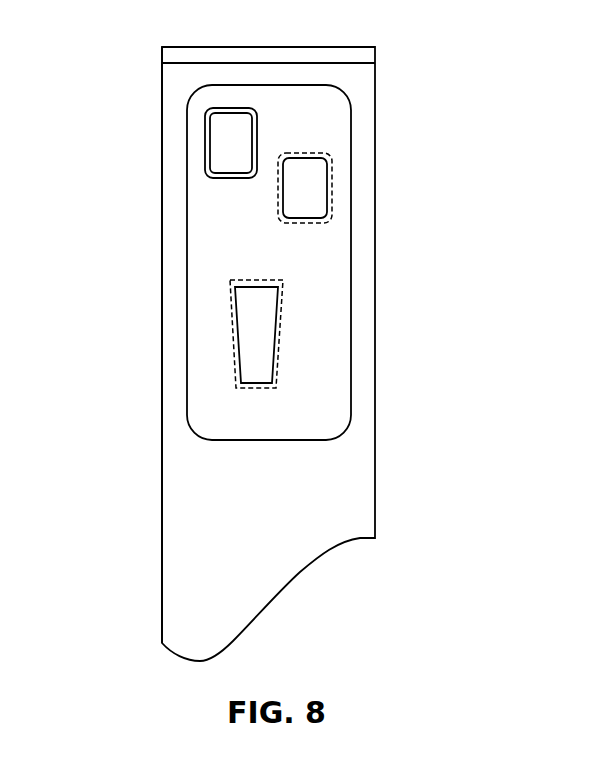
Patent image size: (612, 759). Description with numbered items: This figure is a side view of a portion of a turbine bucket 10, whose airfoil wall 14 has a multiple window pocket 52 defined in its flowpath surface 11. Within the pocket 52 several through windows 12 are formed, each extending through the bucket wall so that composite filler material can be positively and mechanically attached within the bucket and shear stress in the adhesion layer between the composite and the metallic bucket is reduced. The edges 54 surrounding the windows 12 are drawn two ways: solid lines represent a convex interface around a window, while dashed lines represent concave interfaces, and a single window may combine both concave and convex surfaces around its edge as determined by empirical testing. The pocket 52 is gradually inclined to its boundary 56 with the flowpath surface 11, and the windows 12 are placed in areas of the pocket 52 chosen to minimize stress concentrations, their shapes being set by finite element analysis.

The shoe upper / footwear body 10 is at (259, 527).
The surface of body 11 is at (200, 402).
The apertures / openings 12 is at (222, 147).
The body portion 14 is at (338, 338).
The recessed panel 52 is at (330, 277).
The edges of openings 54 is at (232, 180).
The bottom edge of panel 56 is at (323, 440).